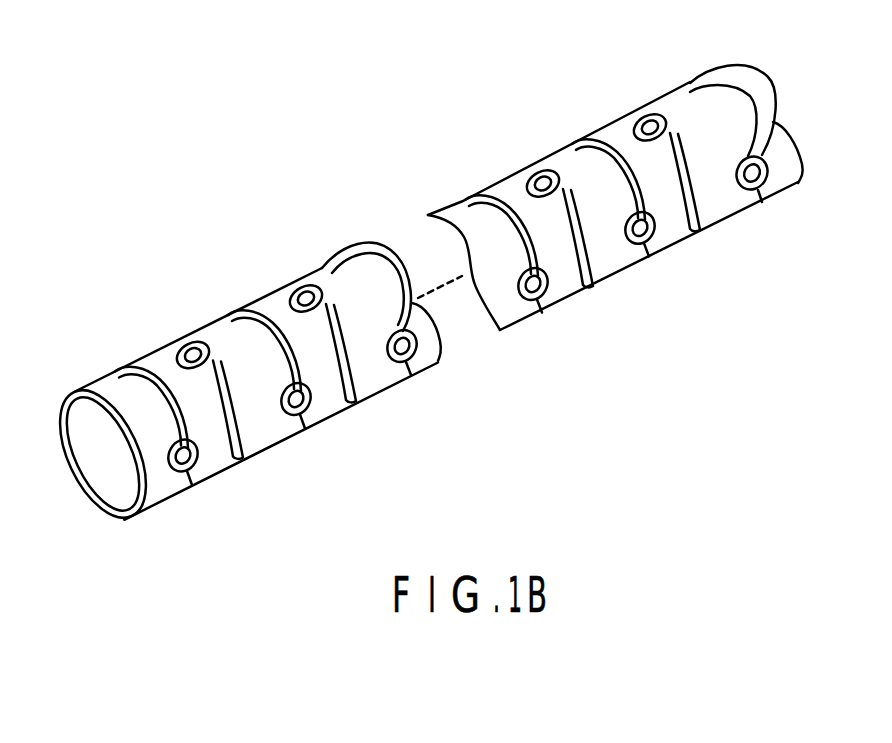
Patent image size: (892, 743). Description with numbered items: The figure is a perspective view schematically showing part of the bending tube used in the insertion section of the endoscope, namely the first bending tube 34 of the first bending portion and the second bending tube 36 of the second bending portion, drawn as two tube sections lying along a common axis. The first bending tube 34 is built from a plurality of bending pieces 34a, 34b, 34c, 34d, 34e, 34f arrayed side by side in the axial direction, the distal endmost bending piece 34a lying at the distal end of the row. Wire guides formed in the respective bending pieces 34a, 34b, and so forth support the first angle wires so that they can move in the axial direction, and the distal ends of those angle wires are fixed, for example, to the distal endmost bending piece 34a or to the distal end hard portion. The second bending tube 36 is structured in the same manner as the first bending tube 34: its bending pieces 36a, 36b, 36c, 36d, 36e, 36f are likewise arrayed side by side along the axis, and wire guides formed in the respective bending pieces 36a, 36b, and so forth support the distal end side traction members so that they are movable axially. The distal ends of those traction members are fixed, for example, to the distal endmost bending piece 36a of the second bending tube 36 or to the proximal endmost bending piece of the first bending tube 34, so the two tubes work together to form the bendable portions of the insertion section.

The first bending tube 34 is at (323, 473).
The bending piece 34a is at (93, 382).
The bending piece 34b is at (157, 350).
The bending piece 34c is at (203, 326).
The bending piece 34d is at (262, 300).
The bending piece 34e is at (315, 272).
The bending piece 34f is at (369, 246).
The second bending tube 36 is at (678, 306).
The bending piece 36a is at (446, 208).
The bending piece 36b is at (504, 179).
The bending piece 36c is at (552, 155).
The bending piece 36d is at (609, 127).
The bending piece 36e is at (661, 102).
The bending piece 36f is at (724, 76).